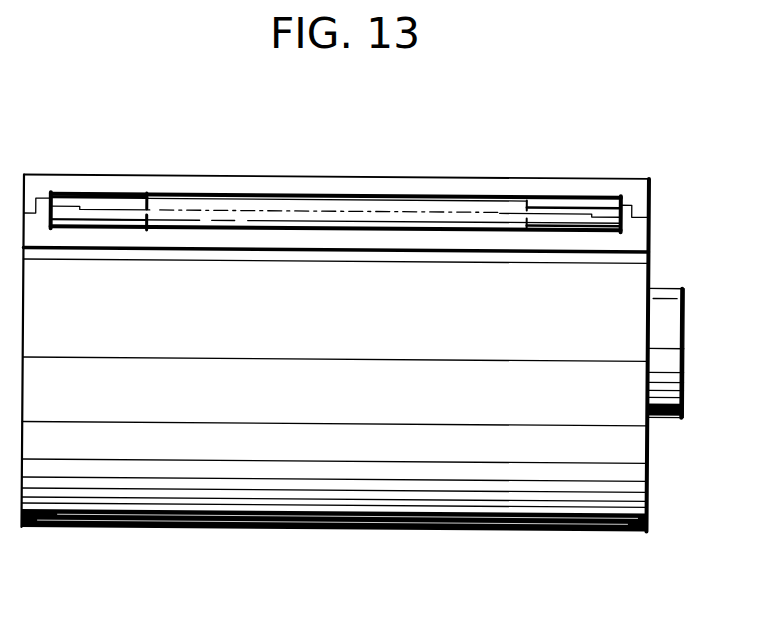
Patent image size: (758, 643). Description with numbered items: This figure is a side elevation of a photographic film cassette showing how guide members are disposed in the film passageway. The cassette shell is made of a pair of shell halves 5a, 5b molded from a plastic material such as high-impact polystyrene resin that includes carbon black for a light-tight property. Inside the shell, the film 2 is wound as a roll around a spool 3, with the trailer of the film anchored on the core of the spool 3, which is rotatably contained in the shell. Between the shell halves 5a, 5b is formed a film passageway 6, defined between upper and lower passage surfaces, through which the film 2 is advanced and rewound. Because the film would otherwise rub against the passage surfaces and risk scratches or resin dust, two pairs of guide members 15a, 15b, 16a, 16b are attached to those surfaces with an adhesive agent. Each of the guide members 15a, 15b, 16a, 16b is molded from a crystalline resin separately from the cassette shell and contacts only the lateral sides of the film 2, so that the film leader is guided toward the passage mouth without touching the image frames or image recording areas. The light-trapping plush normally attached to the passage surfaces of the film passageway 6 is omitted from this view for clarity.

The film 2 is at (371, 205).
The spool 3 is at (670, 345).
The shell half 5a is at (247, 177).
The shell half 5b is at (340, 532).
The film passageway 6 is at (312, 231).
The guide member 15a is at (109, 194).
The guide member 15b is at (584, 199).
The guide member 16a is at (110, 230).
The guide member 16b is at (583, 233).